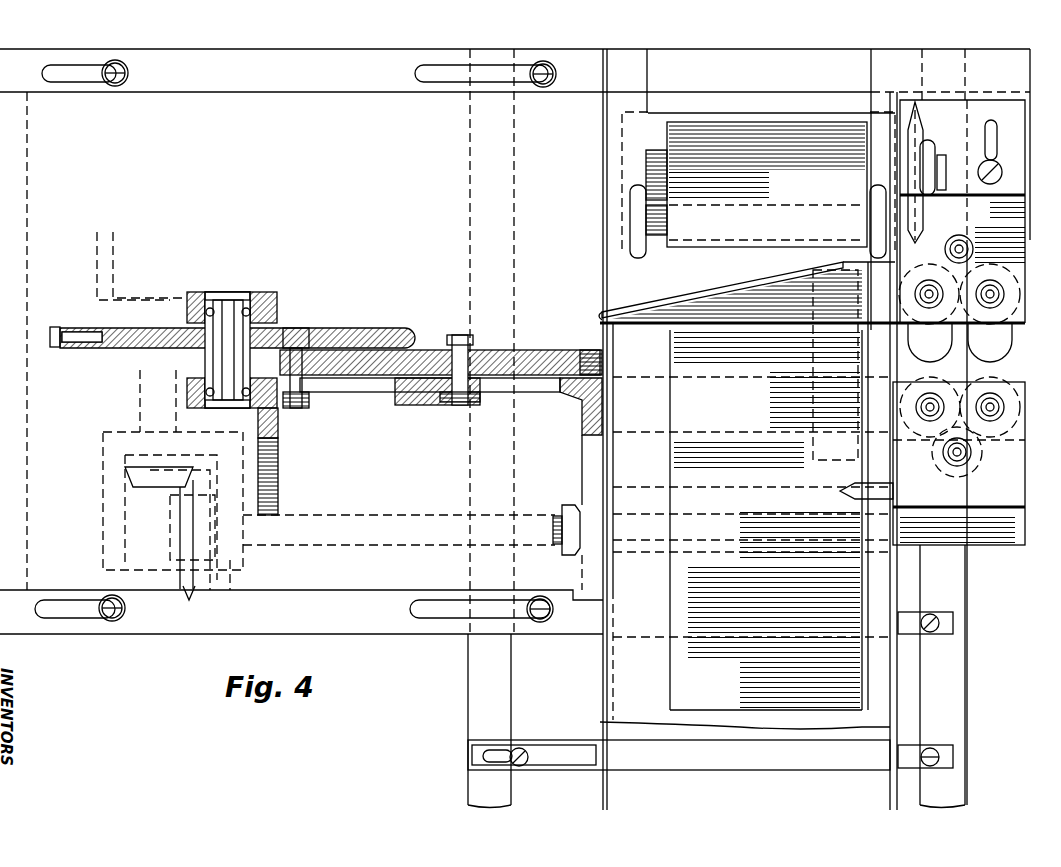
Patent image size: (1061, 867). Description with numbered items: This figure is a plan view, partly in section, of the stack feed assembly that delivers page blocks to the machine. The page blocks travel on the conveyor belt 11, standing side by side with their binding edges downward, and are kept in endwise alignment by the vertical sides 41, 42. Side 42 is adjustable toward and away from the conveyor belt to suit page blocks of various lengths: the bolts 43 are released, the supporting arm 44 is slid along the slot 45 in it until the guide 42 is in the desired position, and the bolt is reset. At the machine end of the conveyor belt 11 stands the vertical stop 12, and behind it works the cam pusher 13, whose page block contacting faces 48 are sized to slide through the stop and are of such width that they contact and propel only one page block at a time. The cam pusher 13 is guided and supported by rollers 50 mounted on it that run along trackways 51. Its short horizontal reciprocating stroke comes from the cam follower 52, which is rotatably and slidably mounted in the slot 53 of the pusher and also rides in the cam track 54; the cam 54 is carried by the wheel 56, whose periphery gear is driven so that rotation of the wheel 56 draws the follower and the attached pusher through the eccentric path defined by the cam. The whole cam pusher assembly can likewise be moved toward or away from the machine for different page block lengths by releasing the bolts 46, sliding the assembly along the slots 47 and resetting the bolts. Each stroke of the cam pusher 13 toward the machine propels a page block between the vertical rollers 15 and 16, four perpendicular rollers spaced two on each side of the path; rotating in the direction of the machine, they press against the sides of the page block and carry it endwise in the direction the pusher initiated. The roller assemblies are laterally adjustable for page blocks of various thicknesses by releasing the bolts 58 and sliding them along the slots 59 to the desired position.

The conveyor belt 11 is at (770, 684).
The vertical stop 12 is at (648, 305).
The cam pusher 13 is at (505, 330).
The vertical roller 15 is at (962, 335).
The vertical roller 16 is at (995, 372).
The vertical side 41 is at (893, 718).
The vertical side 42 is at (603, 710).
The bolt 43 is at (521, 767).
The supporting arm 44 is at (576, 760).
The slot 45 is at (492, 765).
The bolt 46 is at (129, 73).
The slot 47 is at (70, 70).
The page block contacting face 48 is at (606, 348).
The roller 50 is at (458, 405).
The trackway 51 is at (556, 396).
The cam follower 52 is at (297, 408).
The slot 53 is at (376, 393).
The cam 54 is at (72, 350).
The wheel 56 is at (60, 325).
The bolt 58 is at (993, 168).
The slot 59 is at (991, 128).